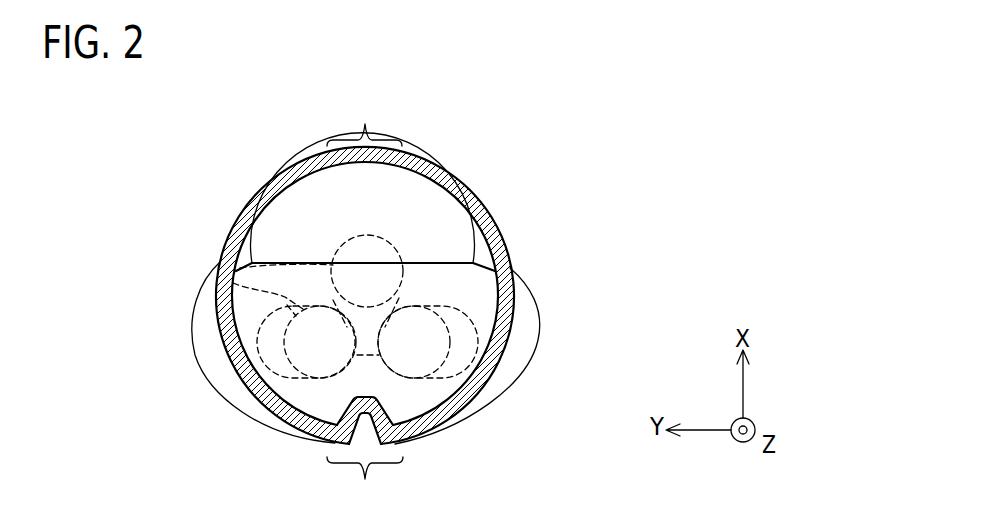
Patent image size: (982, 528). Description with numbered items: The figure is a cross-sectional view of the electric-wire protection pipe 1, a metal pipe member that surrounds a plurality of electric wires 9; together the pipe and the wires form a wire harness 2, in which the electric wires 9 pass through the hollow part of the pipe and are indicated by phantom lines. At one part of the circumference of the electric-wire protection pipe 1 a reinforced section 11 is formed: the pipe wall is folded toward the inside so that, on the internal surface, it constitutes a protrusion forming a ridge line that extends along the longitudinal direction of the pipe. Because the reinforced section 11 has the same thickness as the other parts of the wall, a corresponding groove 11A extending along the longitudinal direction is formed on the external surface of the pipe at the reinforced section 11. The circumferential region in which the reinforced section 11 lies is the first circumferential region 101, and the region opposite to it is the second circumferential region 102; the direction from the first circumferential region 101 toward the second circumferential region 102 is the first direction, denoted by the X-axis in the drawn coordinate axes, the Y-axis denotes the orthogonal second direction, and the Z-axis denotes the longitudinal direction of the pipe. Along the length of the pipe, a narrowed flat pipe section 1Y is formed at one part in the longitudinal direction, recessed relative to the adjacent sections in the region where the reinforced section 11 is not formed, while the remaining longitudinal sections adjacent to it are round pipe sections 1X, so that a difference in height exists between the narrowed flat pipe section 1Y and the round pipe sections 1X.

The electric-wire protection pipe 1 is at (223, 204).
The wire harness 2 is at (607, 300).
The electric wires 9 is at (218, 272).
The reinforced section 11 is at (380, 397).
The groove 11A is at (365, 420).
The round pipe sections 1X is at (494, 219).
The narrowed flat pipe section 1Y is at (538, 312).
The first circumferential region 101 is at (364, 481).
The second circumferential region 102 is at (364, 119).